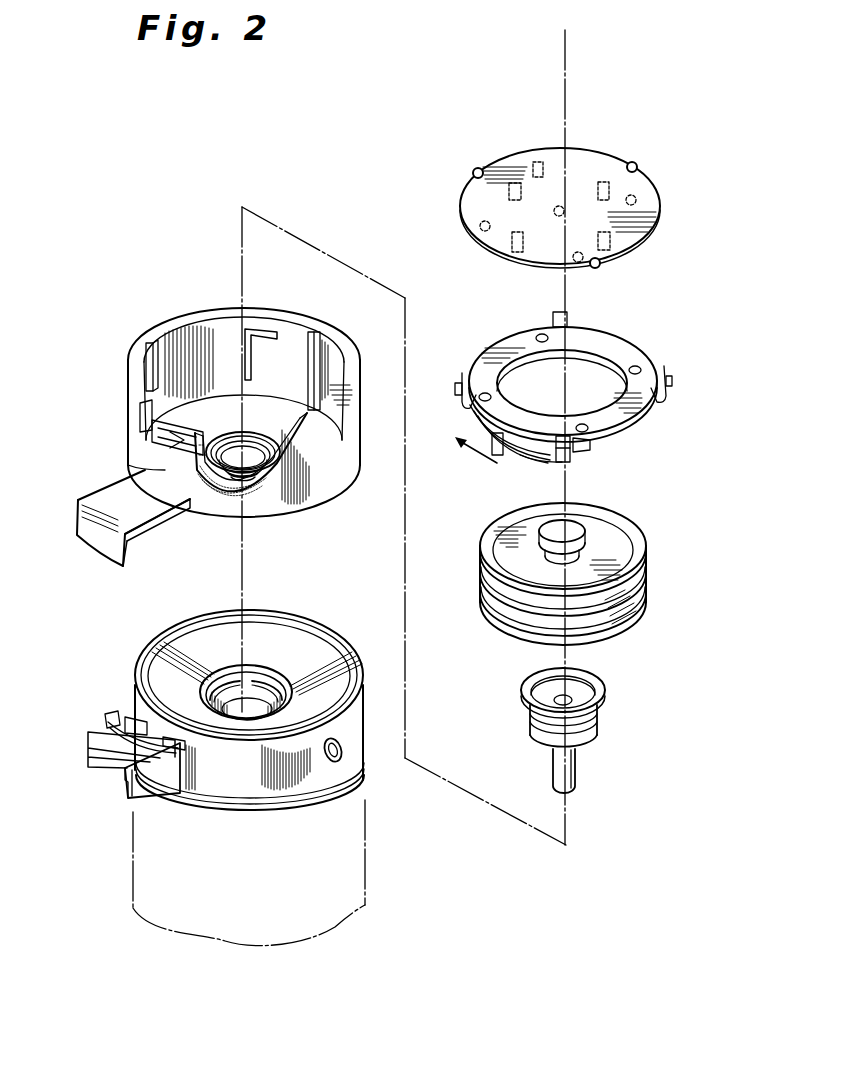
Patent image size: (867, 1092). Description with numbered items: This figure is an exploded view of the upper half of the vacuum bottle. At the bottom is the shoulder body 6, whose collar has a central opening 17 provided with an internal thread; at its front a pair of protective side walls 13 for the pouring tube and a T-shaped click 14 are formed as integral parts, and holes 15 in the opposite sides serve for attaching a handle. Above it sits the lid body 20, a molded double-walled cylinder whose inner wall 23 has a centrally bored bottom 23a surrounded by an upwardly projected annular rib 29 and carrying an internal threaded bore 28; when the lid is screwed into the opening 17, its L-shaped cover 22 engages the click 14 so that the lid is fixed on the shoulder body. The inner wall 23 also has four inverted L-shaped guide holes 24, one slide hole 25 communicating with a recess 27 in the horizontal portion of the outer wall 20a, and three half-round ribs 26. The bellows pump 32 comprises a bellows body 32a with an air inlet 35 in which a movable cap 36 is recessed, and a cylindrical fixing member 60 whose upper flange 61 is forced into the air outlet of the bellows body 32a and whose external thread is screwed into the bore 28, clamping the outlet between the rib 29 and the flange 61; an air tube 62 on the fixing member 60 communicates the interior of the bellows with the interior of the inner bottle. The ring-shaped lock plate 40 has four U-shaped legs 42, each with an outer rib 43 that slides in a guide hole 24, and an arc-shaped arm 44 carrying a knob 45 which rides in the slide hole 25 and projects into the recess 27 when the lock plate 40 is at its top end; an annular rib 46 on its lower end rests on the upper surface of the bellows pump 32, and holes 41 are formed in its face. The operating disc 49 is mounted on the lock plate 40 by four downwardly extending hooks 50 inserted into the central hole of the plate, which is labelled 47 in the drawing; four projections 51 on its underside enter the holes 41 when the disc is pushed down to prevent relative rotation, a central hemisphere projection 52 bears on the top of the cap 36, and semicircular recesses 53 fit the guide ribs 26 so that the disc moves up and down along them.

The shoulder body 6 is at (364, 702).
The protective side walls 13 is at (162, 780).
The T-shaped click 14 is at (130, 735).
The holes 15 is at (342, 752).
The opening 17 is at (244, 684).
The lid body 20 is at (322, 506).
The outer wall 20a is at (168, 467).
The L-shaped cover 22 is at (160, 520).
The inner wall 23 is at (216, 338).
The centrally bored bottom 23a is at (256, 398).
The inverted L-shaped guide hole 24 is at (150, 373).
The slide hole 25 is at (156, 448).
The half-round ribs 26 is at (165, 340).
The recess 27 is at (141, 414).
The internal threaded bore 28 is at (226, 441).
The annular rib 29 is at (262, 436).
The bellows pump 32 is at (648, 562).
The bellows body 32a is at (614, 618).
The air inlet 35 is at (586, 543).
The cap 36 is at (548, 534).
The lock plate 40 is at (630, 342).
The holes 41 is at (486, 392).
The U-shaped legs 42 is at (552, 320).
The rib 43 is at (455, 390).
The arm 44 is at (476, 430).
The knob 45 is at (503, 450).
The annular rib 46 is at (592, 433).
The central opening 47 is at (625, 376).
The operating disc 49 is at (654, 180).
The hooks 50 is at (601, 180).
The projections 51 is at (538, 160).
The hemisphere projection 52 is at (557, 217).
The semicircular recess 53 is at (475, 170).
The cylindrical fixing member 60 is at (600, 718).
The upper flange 61 is at (605, 692).
The air tube 62 is at (577, 772).